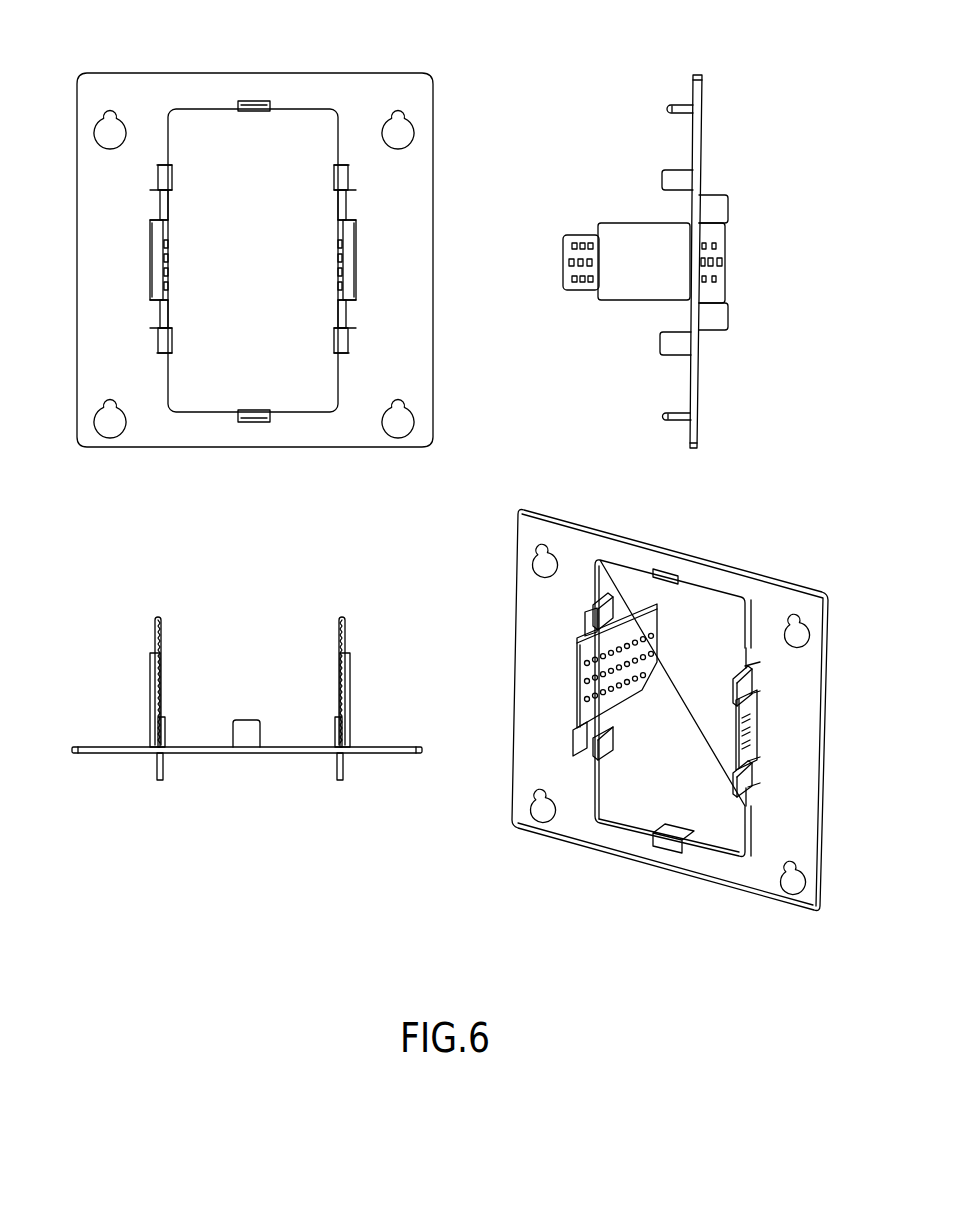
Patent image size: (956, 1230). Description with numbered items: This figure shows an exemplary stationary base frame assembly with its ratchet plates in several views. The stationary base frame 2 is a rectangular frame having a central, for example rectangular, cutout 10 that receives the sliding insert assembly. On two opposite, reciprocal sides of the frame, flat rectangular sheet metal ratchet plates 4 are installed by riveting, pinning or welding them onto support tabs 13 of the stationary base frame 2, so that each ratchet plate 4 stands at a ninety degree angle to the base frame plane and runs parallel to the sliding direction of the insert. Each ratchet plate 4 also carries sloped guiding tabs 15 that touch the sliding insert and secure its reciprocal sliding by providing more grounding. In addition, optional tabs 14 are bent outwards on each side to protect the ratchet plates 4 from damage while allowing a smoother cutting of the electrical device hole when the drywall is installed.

The stationary base frame 2 is at (435, 390).
The ratchet plate 4 is at (578, 232).
The central cutout 10 is at (188, 411).
The support tab 13 is at (645, 306).
The optional tab 14 is at (732, 207).
The sloped guiding tab 15 is at (660, 178).